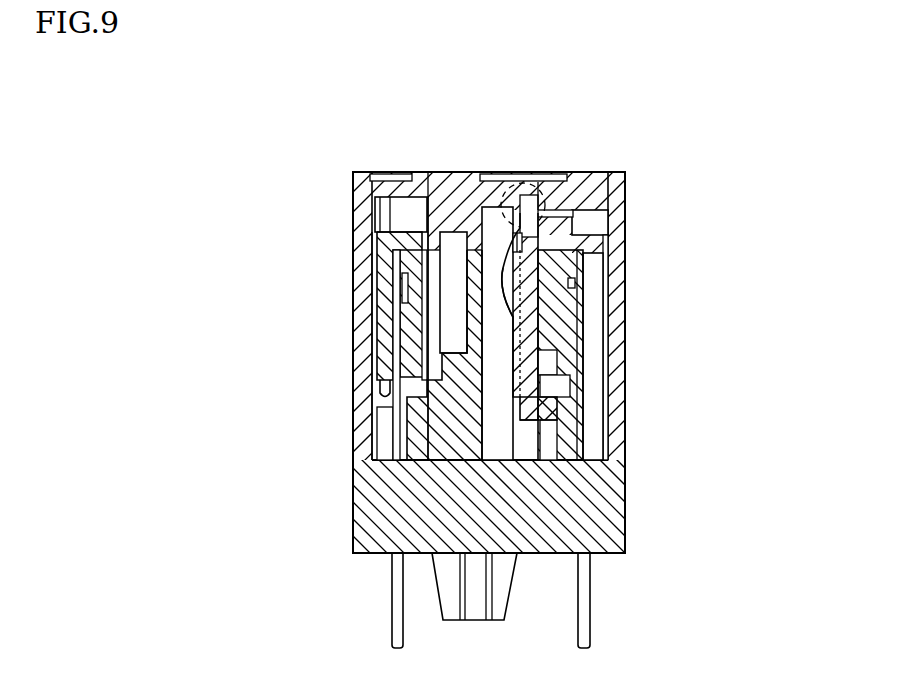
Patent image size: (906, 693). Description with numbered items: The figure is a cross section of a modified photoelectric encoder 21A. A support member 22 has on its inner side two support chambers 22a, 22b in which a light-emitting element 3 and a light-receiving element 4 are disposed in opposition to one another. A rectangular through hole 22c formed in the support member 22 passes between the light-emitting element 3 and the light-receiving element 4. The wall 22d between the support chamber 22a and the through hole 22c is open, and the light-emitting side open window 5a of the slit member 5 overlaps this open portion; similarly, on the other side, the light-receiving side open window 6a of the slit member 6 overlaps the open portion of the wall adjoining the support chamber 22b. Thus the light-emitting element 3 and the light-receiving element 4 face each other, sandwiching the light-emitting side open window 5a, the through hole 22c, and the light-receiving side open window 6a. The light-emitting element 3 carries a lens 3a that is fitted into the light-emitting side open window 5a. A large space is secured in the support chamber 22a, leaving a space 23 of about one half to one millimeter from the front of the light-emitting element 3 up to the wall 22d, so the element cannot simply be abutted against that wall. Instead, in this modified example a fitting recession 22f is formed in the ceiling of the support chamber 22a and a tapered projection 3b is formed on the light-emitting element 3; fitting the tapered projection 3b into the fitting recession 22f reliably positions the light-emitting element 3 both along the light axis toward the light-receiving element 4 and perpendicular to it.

The photoelectric encoder 21A is at (338, 95).
The support member 22 is at (353, 173).
The support chamber 22a is at (595, 422).
The support chamber 22b is at (383, 437).
The through hole 22c is at (440, 176).
The wall 22d is at (450, 203).
The fitting recession 22f is at (507, 207).
The light-emitting element 3 is at (593, 253).
The lens 3a is at (570, 270).
The tapered projection 3b is at (583, 193).
The light-receiving element 4 is at (378, 240).
The slit member 5 is at (520, 460).
The light-emitting side open window 5a is at (560, 297).
The slit member 6 is at (428, 372).
The light-receiving side open window 6a is at (380, 322).
The space 23 is at (503, 445).